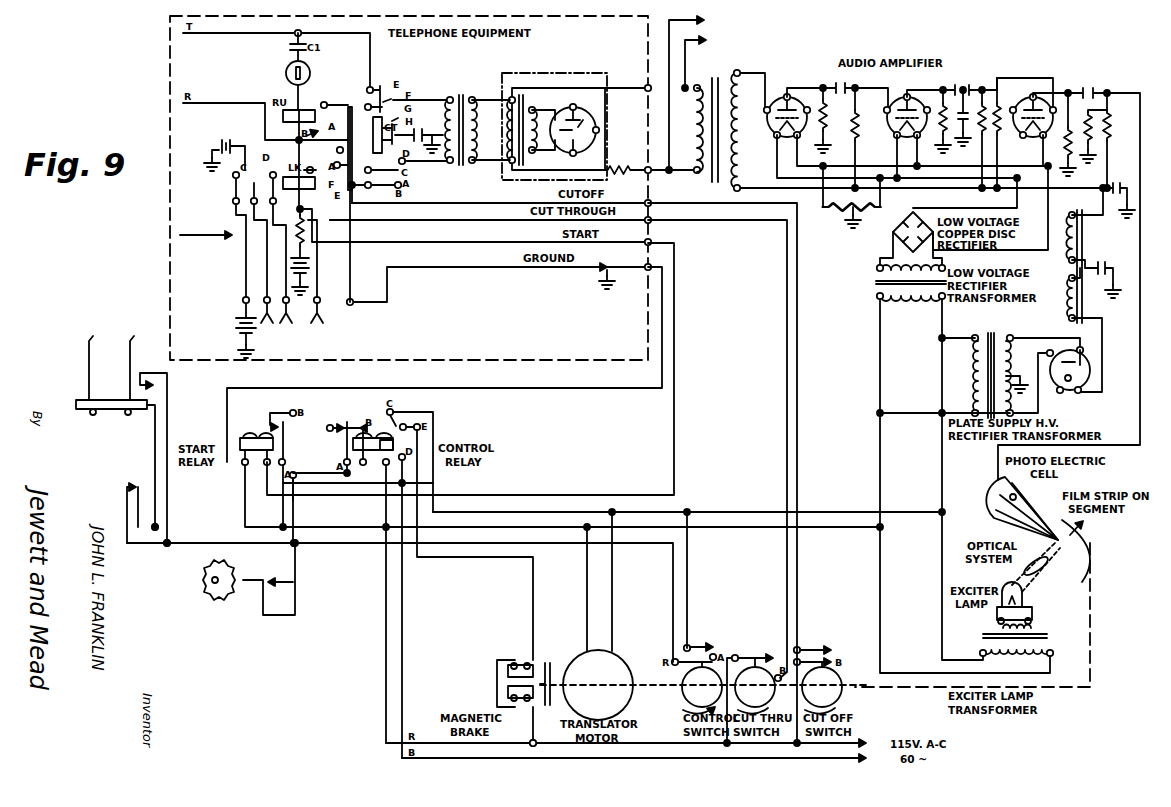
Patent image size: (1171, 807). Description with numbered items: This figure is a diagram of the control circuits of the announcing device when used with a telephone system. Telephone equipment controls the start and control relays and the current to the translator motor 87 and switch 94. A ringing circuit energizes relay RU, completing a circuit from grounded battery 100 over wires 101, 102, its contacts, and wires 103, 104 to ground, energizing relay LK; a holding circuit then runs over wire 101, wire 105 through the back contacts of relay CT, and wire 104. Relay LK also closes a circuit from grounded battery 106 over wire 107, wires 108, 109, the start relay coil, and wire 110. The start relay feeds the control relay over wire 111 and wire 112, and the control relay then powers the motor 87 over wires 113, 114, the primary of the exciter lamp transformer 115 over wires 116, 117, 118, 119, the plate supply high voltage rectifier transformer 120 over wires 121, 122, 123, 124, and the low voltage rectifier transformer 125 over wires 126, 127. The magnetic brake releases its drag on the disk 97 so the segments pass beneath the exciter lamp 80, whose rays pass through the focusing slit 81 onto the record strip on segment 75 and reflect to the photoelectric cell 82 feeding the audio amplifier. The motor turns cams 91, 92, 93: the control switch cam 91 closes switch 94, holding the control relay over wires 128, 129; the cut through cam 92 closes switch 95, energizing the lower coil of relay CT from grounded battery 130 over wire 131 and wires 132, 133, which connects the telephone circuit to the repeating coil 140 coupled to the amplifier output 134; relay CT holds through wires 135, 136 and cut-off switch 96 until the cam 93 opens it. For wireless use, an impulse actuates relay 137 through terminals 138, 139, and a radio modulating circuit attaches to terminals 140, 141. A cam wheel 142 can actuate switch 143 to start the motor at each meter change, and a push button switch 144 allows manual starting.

The film strip on segment 75 is at (1086, 524).
The exciter lamp 80 is at (1024, 600).
The focusing slit 81 is at (1044, 578).
The photoelectric cell 82 is at (1000, 489).
The translator motor 87 is at (622, 670).
The control switch cam 91 is at (682, 696).
The cut through switch cam 92 is at (770, 696).
The cut-off switch cam 93 is at (835, 668).
The control switch 94 is at (708, 648).
The cut through switch 95 is at (769, 657).
The cut-off switch 96 is at (834, 641).
The disk 97 is at (548, 660).
The grounded battery 100 is at (312, 265).
The wire 101 is at (305, 219).
The wire 102 is at (308, 170).
The wire 103 is at (341, 107).
The wire 104 is at (386, 275).
The wire 105 is at (378, 212).
The grounded battery 106 is at (238, 327).
The wire 107 is at (246, 264).
The wire 108 is at (437, 243).
The wire 109 is at (556, 488).
The wire 110 is at (329, 392).
The wire R 111 is at (386, 500).
The wire 112 is at (323, 488).
The wire 113 is at (549, 516).
The wire 114 is at (434, 484).
The exciter lamp transformer 115 is at (1003, 658).
The wire 116 is at (664, 512).
The wire 117 is at (942, 591).
The wire 118 is at (878, 588).
The wire 119 is at (825, 530).
The plate supply high voltage rectifier transformer 120 is at (1042, 346).
The wire 121 is at (942, 473).
The wire 122 is at (992, 336).
The wire 123 is at (912, 413).
The wire 124 is at (878, 463).
The low voltage rectifier transformer 125 is at (876, 284).
The wire 126 is at (942, 331).
The wire 127 is at (878, 378).
The wire 128 is at (688, 600).
The wire 129 is at (358, 547).
The grounded battery 130 is at (421, 133).
The wire 131 is at (341, 142).
The wire 132 is at (479, 222).
The wire 133 is at (786, 375).
The output of the audio amplifier 134 is at (696, 136).
The wire 135 is at (498, 201).
The wire 136 is at (799, 341).
The relay 137 is at (142, 411).
The terminal 138 is at (90, 336).
The terminal 139 is at (132, 336).
The repeating coil 140 is at (452, 99).
The terminal 141 is at (708, 42).
The cam wheel 142 is at (212, 600).
The switch 143 is at (257, 578).
The push button switch 144 is at (130, 485).